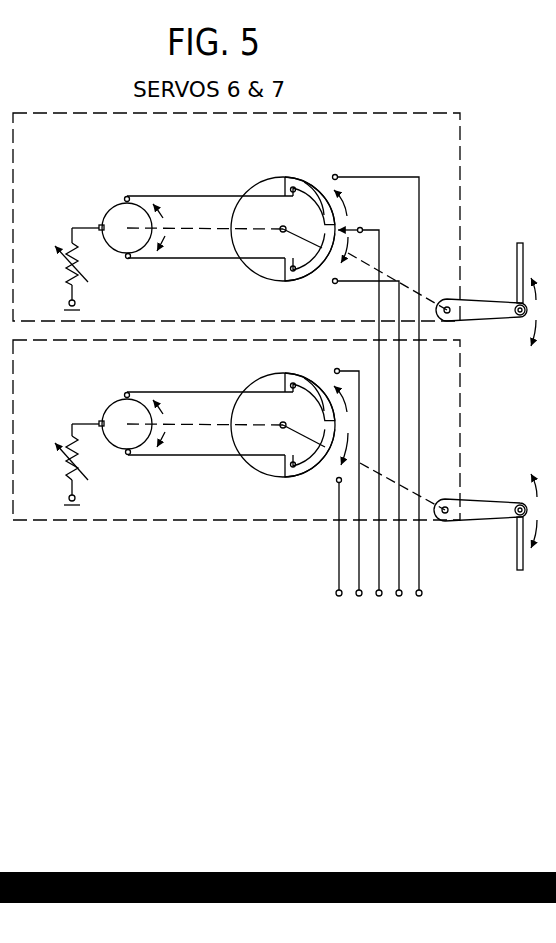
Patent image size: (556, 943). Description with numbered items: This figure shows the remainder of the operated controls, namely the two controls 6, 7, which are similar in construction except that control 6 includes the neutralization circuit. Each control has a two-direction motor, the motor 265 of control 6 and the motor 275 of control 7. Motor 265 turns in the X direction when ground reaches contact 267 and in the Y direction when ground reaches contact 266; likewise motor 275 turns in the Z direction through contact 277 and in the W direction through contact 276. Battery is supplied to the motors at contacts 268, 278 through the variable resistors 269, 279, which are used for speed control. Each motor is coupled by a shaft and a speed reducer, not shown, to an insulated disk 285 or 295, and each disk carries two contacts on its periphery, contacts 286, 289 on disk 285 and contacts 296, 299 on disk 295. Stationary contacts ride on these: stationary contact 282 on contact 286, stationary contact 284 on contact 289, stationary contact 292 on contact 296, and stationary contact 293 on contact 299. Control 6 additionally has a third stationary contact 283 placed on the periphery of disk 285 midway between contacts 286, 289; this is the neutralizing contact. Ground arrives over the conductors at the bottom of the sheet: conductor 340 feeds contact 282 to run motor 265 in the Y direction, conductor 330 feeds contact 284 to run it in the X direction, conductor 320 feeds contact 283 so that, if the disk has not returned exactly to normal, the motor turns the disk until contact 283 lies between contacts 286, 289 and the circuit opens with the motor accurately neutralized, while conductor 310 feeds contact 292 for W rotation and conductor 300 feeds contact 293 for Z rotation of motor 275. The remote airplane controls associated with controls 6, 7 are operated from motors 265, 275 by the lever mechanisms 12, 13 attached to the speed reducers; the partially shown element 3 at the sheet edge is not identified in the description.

The control 6 is at (400, 113).
The control 7 is at (311, 522).
The motor 265 is at (112, 206).
The contact 266 is at (127, 196).
The contact 267 is at (129, 259).
The contact 268 is at (98, 225).
The variable resistor 269 is at (60, 262).
The insulated disk 285 is at (262, 190).
The contact 286 is at (319, 205).
The contact 289 is at (314, 243).
The stationary contact 282 is at (322, 187).
The stationary contact 283 is at (357, 229).
The stationary contact 284 is at (327, 278).
The lever mechanism 12 is at (516, 262).
The control element 3 is at (552, 314).
The motor 275 is at (112, 402).
The contact 276 is at (127, 392).
The contact 277 is at (129, 456).
The contact 278 is at (98, 423).
The variable resistor 279 is at (58, 467).
The insulated disk 295 is at (262, 386).
The contact 296 is at (315, 398).
The contact 299 is at (310, 455).
The stationary contact 292 is at (322, 385).
The stationary contact 293 is at (327, 481).
The lever mechanism 13 is at (515, 538).
The conductor 300 is at (336, 566).
The conductor 310 is at (356, 577).
The conductor 320 is at (380, 540).
The conductor 330 is at (399, 568).
The conductor 340 is at (421, 595).